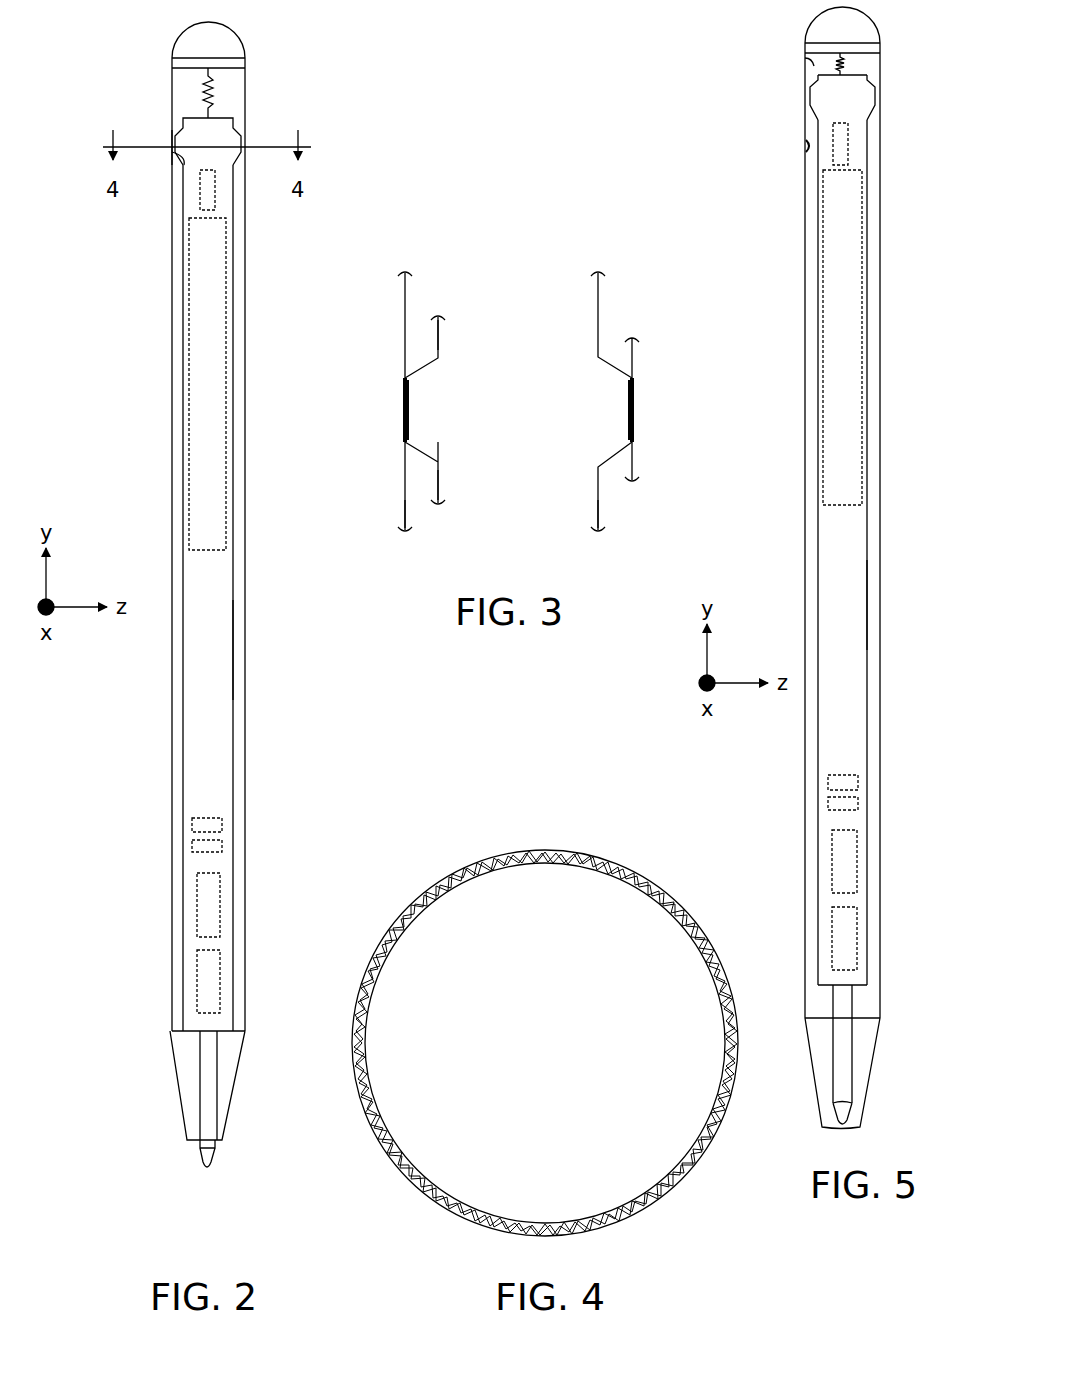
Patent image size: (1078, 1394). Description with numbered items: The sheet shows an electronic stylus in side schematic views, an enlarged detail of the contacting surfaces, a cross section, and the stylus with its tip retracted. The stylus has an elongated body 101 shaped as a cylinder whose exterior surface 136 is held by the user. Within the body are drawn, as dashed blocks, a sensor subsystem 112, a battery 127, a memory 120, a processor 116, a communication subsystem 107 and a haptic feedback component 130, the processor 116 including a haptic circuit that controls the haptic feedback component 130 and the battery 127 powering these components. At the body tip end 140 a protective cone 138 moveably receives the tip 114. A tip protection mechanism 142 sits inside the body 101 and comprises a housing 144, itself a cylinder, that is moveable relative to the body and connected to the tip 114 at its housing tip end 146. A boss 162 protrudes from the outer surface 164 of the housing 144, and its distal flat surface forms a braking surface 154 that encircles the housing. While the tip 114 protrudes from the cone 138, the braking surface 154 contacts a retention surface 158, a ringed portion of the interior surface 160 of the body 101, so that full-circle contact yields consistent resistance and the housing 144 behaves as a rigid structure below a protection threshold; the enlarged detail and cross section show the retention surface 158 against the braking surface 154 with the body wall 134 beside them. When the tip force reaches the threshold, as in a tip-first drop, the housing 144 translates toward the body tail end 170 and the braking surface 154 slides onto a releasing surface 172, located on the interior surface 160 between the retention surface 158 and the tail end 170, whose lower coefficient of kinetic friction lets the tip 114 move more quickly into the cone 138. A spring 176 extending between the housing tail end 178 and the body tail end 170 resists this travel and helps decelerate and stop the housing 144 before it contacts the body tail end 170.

In FIG. 2, the elongated body 101 is at (172, 298).
In FIG. 4, the elongated body 101 is at (385, 940).
In FIG. 2, the communication subsystem 107 is at (204, 915).
In FIG. 5, the communication subsystem 107 is at (844, 861).
In FIG. 2, the sensor subsystem 112 is at (200, 202).
In FIG. 5, the sensor subsystem 112 is at (840, 144).
In FIG. 2, the tip 114 is at (209, 1170).
In FIG. 5, the tip 114 is at (846, 1116).
In FIG. 2, the processor 116 is at (196, 845).
In FIG. 5, the processor 116 is at (843, 803).
In FIG. 2, the memory 120 is at (196, 822).
In FIG. 5, the memory 120 is at (843, 782).
In FIG. 2, the battery 127 is at (194, 460).
In FIG. 5, the battery 127 is at (842, 337).
In FIG. 2, the haptic feedback component 130 is at (204, 981).
In FIG. 5, the haptic feedback component 130 is at (844, 938).
In FIG. 3, the outer wall 134 is at (405, 322).
In FIG. 2, the exterior surface 136 is at (245, 464).
In FIG. 2, the protective cone 138 is at (236, 1088).
In FIG. 5, the protective cone 138 is at (876, 1046).
In FIG. 2, the body tip end 140 is at (126, 1020).
In FIG. 2, the tip protection mechanism 142 is at (170, 687).
In FIG. 5, the tip protection mechanism 142 is at (803, 569).
In FIG. 2, the housing 144 is at (236, 650).
In FIG. 3, the housing 144 is at (440, 336).
In FIG. 5, the housing 144 is at (872, 604).
In FIG. 5, the housing tip end 146 is at (860, 986).
In FIG. 2, the braking surface 154 is at (182, 162).
In FIG. 3, the braking surface 154 is at (410, 424).
In FIG. 4, the braking surface 154 is at (508, 866).
In FIG. 5, the braking surface 154 is at (806, 104).
In FIG. 2, the retention surface 158 is at (172, 145).
In FIG. 3, the retention surface 158 is at (404, 410).
In FIG. 4, the retention surface 158 is at (438, 886).
In FIG. 5, the retention surface 158 is at (808, 148).
In FIG. 3, the interior surface 160 is at (405, 517).
In FIG. 5, the interior surface 160 is at (815, 195).
In FIG. 3, the boss 162 is at (420, 348).
In FIG. 4, the boss 162 is at (373, 1000).
In FIG. 2, the outer surface 164 is at (233, 283).
In FIG. 3, the outer surface 164 is at (438, 495).
In FIG. 2, the body tail end 170 is at (264, 66).
In FIG. 5, the body tail end 170 is at (892, 46).
In FIG. 5, the releasing surface 172 is at (810, 62).
In FIG. 2, the spring 176 is at (200, 100).
In FIG. 5, the spring 176 is at (846, 62).
In FIG. 2, the housing tail end 178 is at (228, 118).
In FIG. 5, the housing tail end 178 is at (782, 45).